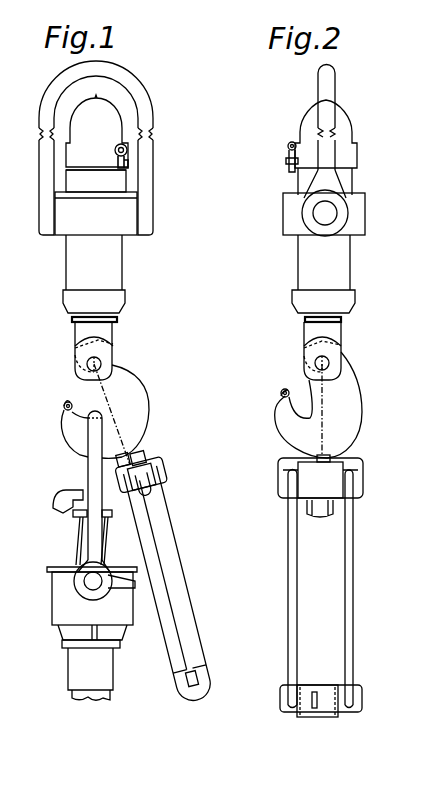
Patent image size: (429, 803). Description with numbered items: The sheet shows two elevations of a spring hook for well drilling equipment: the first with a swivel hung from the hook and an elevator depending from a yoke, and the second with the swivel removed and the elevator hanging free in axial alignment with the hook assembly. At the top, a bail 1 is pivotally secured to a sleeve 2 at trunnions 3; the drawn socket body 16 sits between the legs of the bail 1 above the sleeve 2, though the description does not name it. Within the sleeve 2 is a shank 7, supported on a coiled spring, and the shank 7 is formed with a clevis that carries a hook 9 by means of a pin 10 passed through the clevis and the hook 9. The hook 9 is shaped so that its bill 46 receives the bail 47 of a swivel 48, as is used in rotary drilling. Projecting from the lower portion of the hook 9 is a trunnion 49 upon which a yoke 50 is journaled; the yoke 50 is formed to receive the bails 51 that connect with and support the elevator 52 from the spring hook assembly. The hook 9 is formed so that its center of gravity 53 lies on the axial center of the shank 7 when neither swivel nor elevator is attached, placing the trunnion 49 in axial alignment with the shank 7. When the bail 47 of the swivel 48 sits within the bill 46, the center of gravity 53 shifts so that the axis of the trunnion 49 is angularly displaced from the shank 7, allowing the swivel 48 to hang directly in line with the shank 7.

In FIG. 1, the bail 1 is at (143, 100).
In FIG. 2, the bail 1 is at (331, 82).
In FIG. 1, the cable socket body 16 is at (61, 118).
In FIG. 2, the cable socket body 16 is at (367, 110).
In FIG. 1, the trunnions 3 is at (150, 213).
In FIG. 2, the trunnions 3 is at (330, 213).
In FIG. 1, the sleeve 2 is at (73, 223).
In FIG. 2, the sleeve 2 is at (360, 232).
In FIG. 1, the shank 7 is at (113, 320).
In FIG. 2, the shank 7 is at (341, 321).
In FIG. 1, the hook 9 is at (133, 388).
In FIG. 2, the hook 9 is at (352, 397).
In FIG. 1, the pin 10 is at (99, 363).
In FIG. 2, the pin 10 is at (327, 363).
In FIG. 1, the center of gravity 53 is at (108, 412).
In FIG. 2, the center of gravity 53 is at (323, 412).
In FIG. 1, the bill 46 is at (64, 412).
In FIG. 2, the bill 46 is at (281, 407).
In FIG. 1, the bail of the swivel 47 is at (88, 467).
In FIG. 1, the swivel 48 is at (60, 595).
In FIG. 1, the trunnion 49 is at (143, 438).
In FIG. 1, the yoke 50 is at (152, 468).
In FIG. 2, the yoke 50 is at (372, 495).
In FIG. 1, the bails 51 is at (194, 578).
In FIG. 2, the bails 51 is at (289, 607).
In FIG. 1, the elevator 52 is at (208, 698).
In FIG. 2, the elevator 52 is at (315, 713).